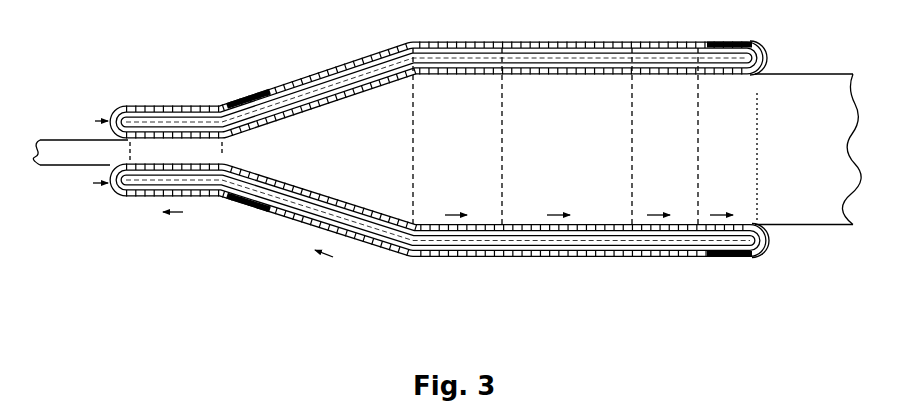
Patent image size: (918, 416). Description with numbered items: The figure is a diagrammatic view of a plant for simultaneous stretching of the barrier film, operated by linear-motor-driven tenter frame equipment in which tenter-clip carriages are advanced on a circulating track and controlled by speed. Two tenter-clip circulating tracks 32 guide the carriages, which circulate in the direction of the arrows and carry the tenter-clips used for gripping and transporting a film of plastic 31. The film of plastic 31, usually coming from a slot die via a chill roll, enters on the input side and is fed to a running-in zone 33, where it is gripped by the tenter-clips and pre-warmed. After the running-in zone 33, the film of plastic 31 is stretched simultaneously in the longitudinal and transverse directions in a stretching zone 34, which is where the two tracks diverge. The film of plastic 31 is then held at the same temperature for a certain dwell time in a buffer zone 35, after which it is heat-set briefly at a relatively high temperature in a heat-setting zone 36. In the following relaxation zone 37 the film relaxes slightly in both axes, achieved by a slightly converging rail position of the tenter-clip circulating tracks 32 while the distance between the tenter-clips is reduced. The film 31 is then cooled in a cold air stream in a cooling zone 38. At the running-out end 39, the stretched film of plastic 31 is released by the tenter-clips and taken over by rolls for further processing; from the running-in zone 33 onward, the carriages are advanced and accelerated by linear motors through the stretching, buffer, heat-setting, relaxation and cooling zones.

The film of plastic 31 is at (61, 139).
The tenter-clip circulating tracks 32 is at (118, 137).
The running-in zone 33 is at (150, 136).
The stretching zone 34 is at (288, 152).
The buffer zone 35 is at (473, 136).
The heat-setting zone 36 is at (589, 136).
The relaxation zone 37 is at (672, 136).
The cooling zone 38 is at (733, 158).
The running-out end 39 is at (754, 65).